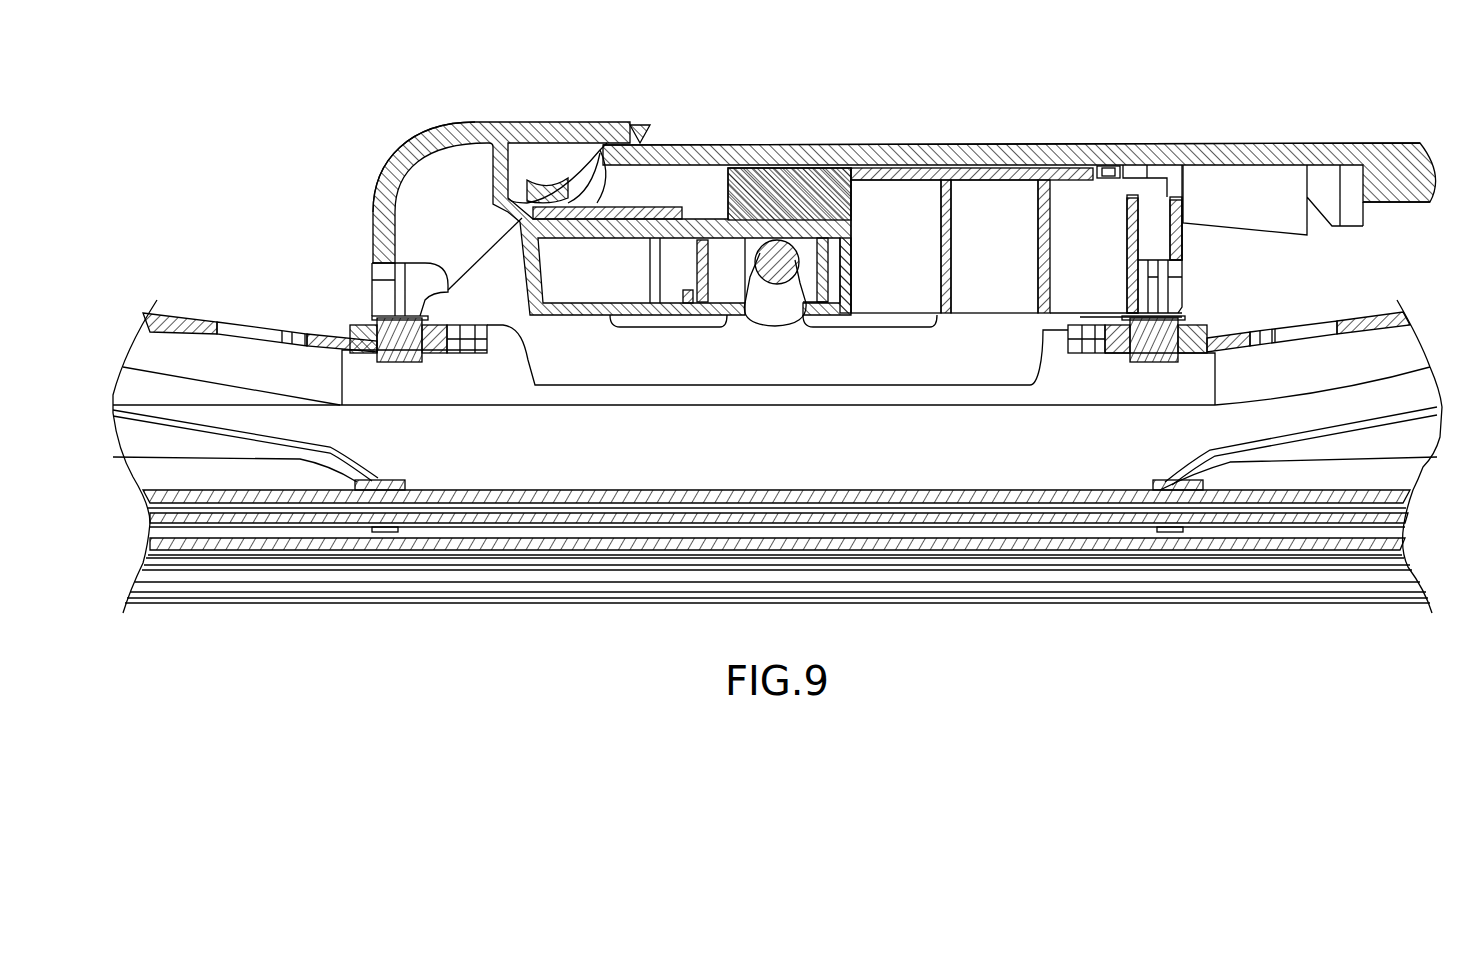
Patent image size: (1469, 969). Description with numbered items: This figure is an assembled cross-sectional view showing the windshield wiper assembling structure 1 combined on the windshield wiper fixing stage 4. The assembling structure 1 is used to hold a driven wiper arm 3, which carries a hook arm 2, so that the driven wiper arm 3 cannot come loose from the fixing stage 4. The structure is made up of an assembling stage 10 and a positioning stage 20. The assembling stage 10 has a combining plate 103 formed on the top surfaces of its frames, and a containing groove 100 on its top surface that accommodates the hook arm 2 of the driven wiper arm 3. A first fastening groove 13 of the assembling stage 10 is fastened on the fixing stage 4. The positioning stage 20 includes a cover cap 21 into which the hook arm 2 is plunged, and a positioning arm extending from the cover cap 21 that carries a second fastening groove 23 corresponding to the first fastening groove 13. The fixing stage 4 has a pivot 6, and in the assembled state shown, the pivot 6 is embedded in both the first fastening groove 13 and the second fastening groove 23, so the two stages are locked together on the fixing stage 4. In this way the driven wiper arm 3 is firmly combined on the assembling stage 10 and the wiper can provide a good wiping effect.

The windshield wiper assembling structure 1 is at (322, 189).
The hook arm 2 is at (552, 182).
The driven wiper arm 3 is at (1062, 147).
The windshield wiper fixing stage 4 is at (683, 368).
The pivot 6 is at (779, 240).
The assembling stage 10 is at (1188, 243).
The first fastening groove 13 is at (840, 168).
The positioning stage 20 is at (494, 117).
The cover cap 21 is at (430, 146).
The second fastening groove 23 is at (746, 213).
The containing groove 100 is at (597, 172).
The combining plate 103 is at (903, 145).